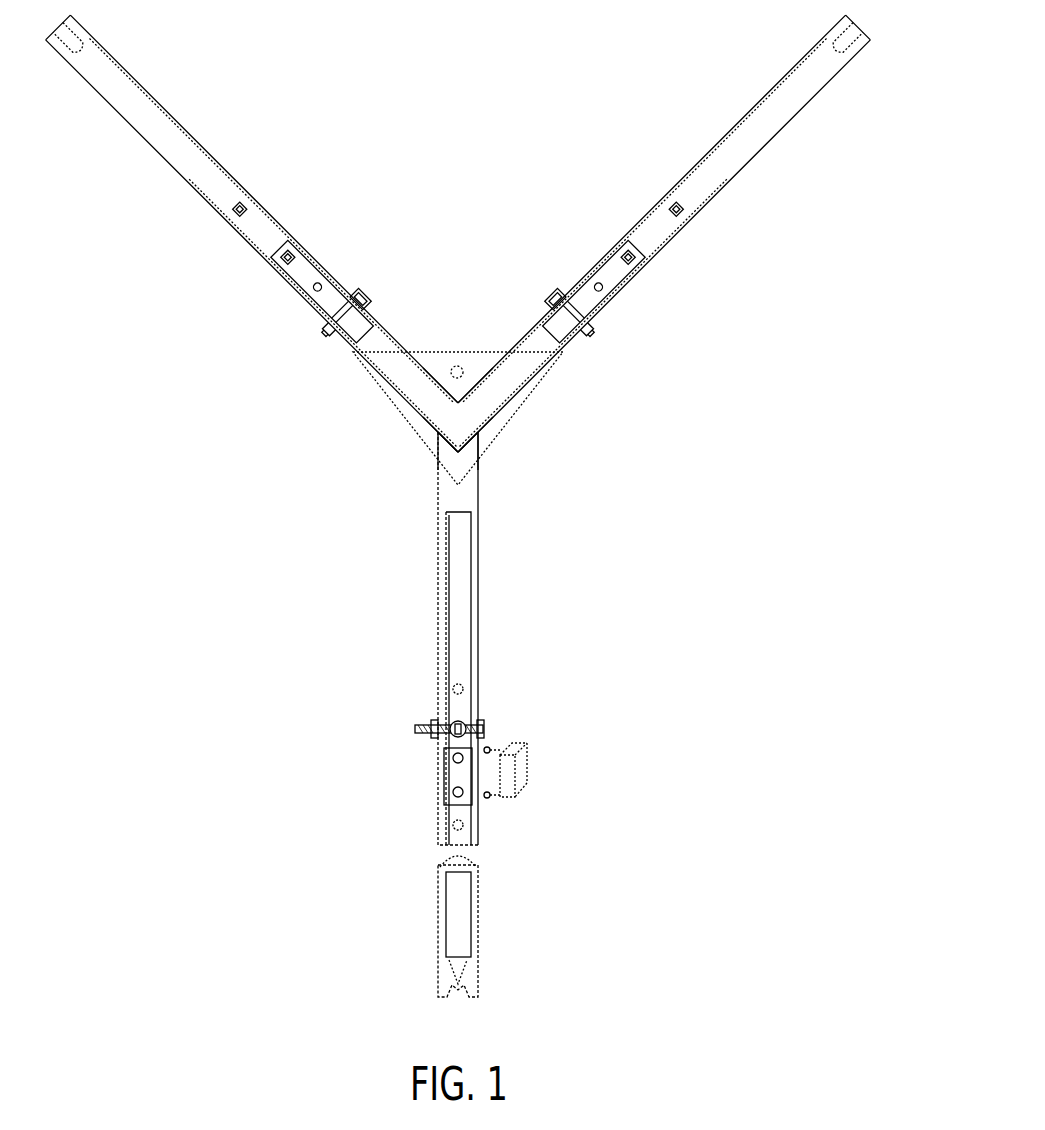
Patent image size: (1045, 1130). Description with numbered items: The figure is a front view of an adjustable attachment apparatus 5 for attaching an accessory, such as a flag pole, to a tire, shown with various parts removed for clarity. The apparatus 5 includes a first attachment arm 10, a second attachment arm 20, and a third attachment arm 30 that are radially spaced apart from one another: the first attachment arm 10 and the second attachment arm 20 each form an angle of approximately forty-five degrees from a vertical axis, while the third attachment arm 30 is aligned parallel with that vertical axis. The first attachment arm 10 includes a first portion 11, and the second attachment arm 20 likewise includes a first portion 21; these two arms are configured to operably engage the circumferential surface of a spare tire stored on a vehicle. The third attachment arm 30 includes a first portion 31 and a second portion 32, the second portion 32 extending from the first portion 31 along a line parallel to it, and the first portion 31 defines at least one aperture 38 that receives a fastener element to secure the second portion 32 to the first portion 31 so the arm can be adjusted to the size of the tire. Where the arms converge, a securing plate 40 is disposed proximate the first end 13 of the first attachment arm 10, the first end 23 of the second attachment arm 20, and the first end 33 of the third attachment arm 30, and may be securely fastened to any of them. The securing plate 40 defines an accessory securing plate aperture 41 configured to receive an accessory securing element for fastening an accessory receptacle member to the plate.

The adjustable attachment apparatus 5 is at (479, 502).
The first attachment arm 10 is at (263, 234).
The first portion 11 is at (271, 220).
The first end 13 is at (376, 409).
The second attachment arm 20 is at (652, 234).
The first portion 21 is at (644, 220).
The first end 23 is at (550, 405).
The third attachment arm 30 is at (447, 628).
The first portion 31 is at (404, 678).
The second portion 32 is at (504, 926).
The first end 33 is at (507, 448).
The aperture 38 is at (504, 740).
The securing plate 40 is at (478, 370).
The accessory securing plate aperture 41 is at (444, 320).